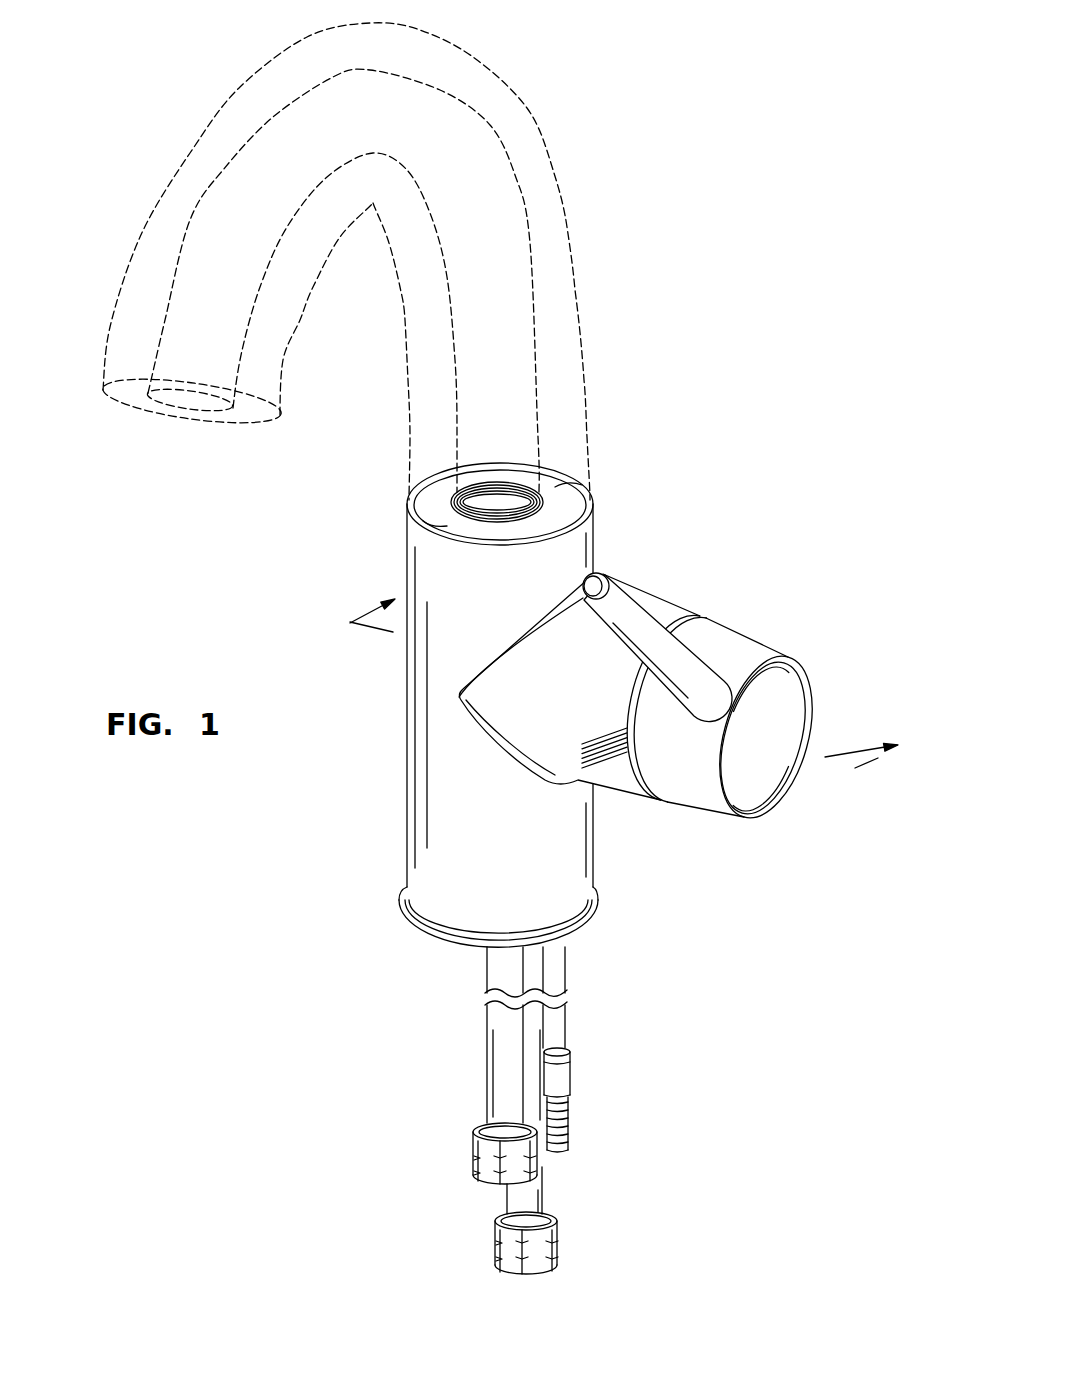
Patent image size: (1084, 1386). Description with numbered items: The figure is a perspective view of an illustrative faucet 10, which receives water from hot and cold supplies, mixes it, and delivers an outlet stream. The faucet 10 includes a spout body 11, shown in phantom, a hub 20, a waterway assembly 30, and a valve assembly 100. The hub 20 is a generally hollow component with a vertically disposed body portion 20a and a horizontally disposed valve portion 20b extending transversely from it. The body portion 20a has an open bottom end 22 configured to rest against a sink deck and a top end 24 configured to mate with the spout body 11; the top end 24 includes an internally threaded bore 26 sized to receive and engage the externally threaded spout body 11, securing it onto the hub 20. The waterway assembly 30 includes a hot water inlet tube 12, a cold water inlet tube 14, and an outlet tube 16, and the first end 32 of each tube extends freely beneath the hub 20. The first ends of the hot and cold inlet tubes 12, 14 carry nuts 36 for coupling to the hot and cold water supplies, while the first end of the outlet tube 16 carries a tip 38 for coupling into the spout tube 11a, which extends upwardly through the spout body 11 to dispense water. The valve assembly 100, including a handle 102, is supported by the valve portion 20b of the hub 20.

The faucet 10 is at (499, 674).
The spout body 11 is at (570, 247).
The spout tube 11a is at (510, 187).
The hot water inlet tube 12 is at (488, 1072).
The cold water inlet tube 14 is at (545, 1197).
The outlet tube 16 is at (560, 1025).
The hub 20 is at (446, 652).
The body portion 20a is at (415, 538).
The valve portion 20b is at (670, 620).
The open bottom end 22 is at (413, 932).
The top end 24 is at (437, 490).
The internally threaded bore 26 is at (512, 493).
The waterway assembly 30 is at (496, 1136).
The first end 32 is at (510, 1224).
The nuts 36 is at (473, 1158).
The tip 38 is at (560, 1105).
The valve assembly 100 is at (644, 732).
The handle 102 is at (752, 657).